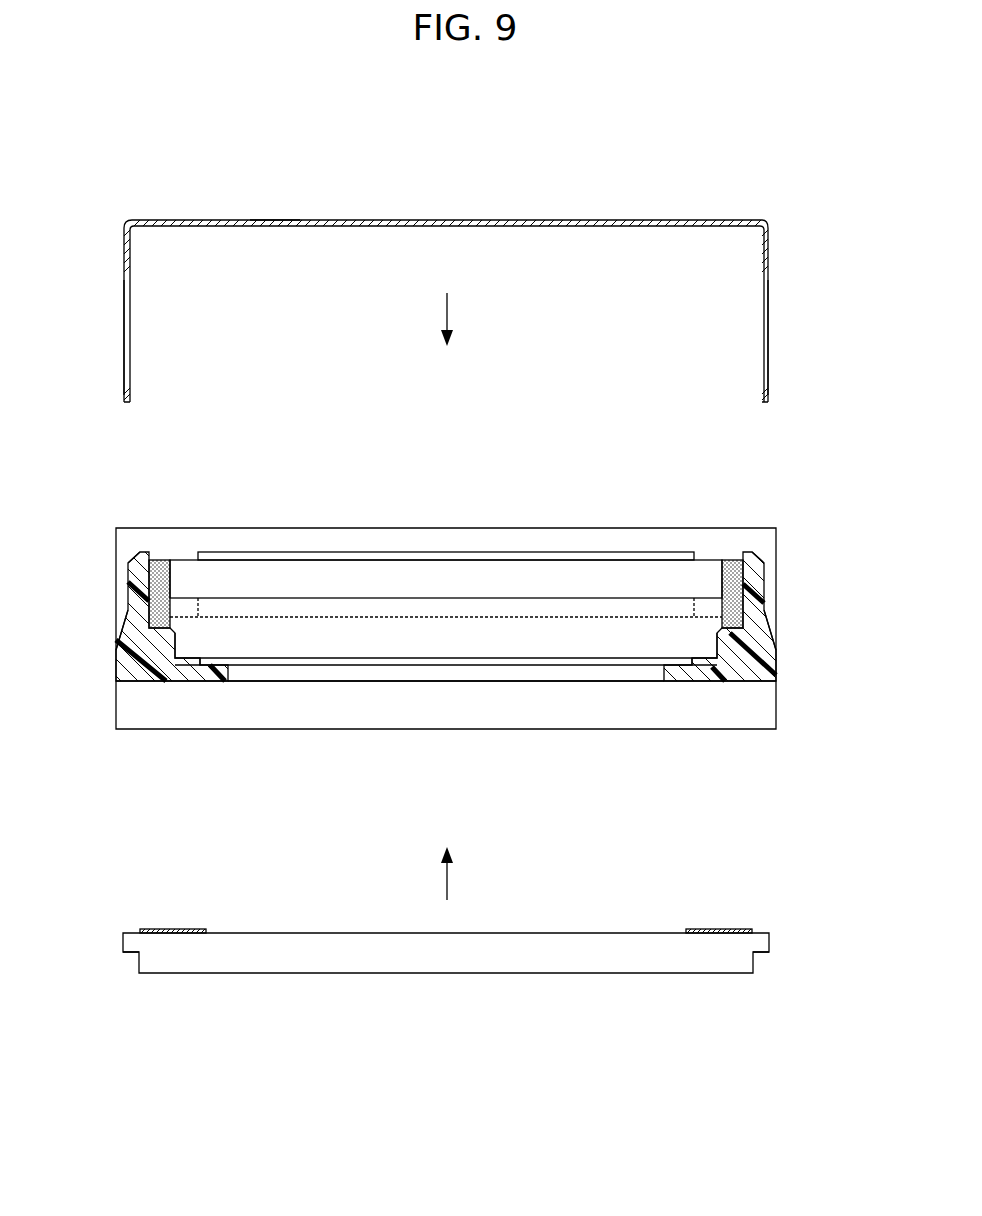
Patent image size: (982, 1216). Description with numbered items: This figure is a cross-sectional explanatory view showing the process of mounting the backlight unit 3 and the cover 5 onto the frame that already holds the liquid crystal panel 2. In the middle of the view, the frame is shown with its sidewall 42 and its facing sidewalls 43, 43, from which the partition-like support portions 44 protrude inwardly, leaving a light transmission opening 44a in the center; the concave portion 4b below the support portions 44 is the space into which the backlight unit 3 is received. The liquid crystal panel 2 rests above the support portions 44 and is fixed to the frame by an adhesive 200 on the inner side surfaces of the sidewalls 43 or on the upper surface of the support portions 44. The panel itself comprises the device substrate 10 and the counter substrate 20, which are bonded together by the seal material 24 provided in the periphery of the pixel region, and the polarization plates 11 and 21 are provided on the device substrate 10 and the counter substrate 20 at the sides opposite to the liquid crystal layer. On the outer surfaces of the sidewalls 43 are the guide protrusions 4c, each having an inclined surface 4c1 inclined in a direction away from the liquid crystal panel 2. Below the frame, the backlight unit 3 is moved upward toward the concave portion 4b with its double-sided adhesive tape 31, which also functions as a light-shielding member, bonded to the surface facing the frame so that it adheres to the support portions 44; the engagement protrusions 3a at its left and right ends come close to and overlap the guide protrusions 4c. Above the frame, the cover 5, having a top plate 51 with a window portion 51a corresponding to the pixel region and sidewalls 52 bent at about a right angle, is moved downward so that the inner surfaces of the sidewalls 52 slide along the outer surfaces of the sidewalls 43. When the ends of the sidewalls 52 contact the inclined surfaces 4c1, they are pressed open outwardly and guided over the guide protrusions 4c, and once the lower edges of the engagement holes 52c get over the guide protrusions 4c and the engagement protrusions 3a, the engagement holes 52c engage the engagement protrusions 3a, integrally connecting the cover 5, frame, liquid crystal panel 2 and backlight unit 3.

The cover 5 is at (453, 273).
The top plate 51 is at (652, 220).
The window portion 51a is at (265, 221).
The sidewall 52 is at (125, 250).
The engagement hole 52c is at (125, 277).
The liquid crystal panel 2 is at (446, 627).
The device substrate 10 is at (331, 576).
The polarization plate 11 is at (461, 556).
The seal material 24 is at (398, 608).
The counter substrate 20 is at (418, 640).
The polarization plate 21 is at (494, 662).
The adhesive 200 is at (158, 568).
The sidewall 42 is at (637, 536).
The sidewall 43 is at (137, 570).
The inclined surface 4c1 is at (126, 628).
The guide protrusion 4c is at (124, 671).
The concave portion 4b is at (183, 713).
The support portion 44 is at (224, 668).
The light transmission opening 44a is at (337, 688).
The backlight unit 3 is at (449, 993).
The engagement protrusion 3a is at (130, 942).
The double-sided adhesive tape 31 is at (188, 934).